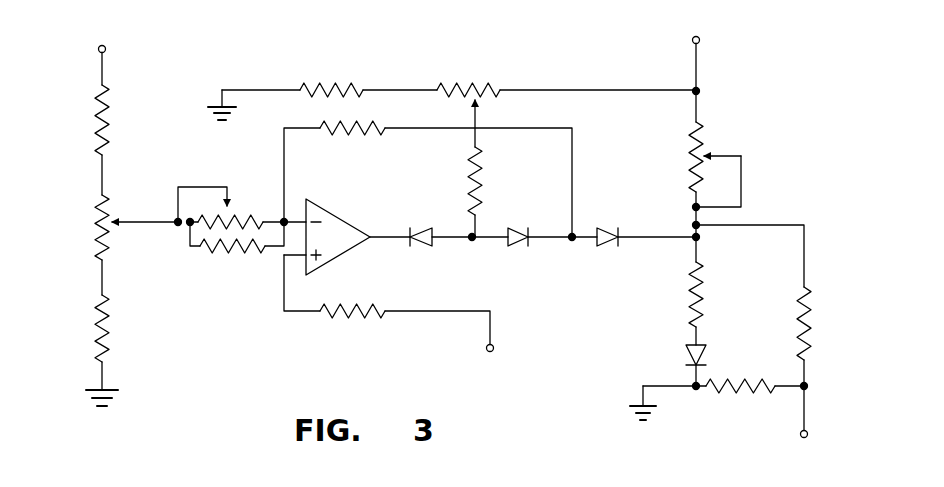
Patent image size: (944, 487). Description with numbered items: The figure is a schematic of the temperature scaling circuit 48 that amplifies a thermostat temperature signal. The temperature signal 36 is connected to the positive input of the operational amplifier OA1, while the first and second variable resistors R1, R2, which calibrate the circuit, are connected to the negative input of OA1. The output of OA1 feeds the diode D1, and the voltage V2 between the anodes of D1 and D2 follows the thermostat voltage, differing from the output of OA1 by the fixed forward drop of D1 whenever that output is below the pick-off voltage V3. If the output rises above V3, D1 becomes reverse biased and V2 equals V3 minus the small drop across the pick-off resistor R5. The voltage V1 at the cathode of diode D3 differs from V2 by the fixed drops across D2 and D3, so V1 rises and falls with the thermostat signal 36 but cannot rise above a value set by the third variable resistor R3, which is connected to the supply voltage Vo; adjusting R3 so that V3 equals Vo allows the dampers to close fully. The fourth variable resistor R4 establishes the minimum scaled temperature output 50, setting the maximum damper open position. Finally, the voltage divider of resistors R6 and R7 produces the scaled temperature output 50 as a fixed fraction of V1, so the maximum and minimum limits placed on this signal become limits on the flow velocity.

The power supply voltage Vo is at (396, 67).
The first variable resistor R1 is at (95, 238).
The second variable resistor R2 is at (230, 217).
The third variable resistor R3 is at (484, 88).
The fourth variable resistor R4 is at (690, 168).
The pick-off resistor R5 is at (483, 186).
The resistor R6 is at (714, 392).
The resistor R7 is at (800, 318).
The operational amplifier OA1 is at (341, 257).
The diode D1 is at (430, 249).
The diode D2 is at (512, 249).
The diode D3 is at (606, 249).
The voltage at the cathode of diode D3 V1 is at (700, 240).
The voltage between the anodes of D1 and D2 V2 is at (472, 241).
The pick-off voltage V3 is at (480, 121).
The temperature signal 36 is at (494, 338).
The temperature scaling circuit 48 is at (372, 60).
The scaled temperature output 50 is at (806, 418).